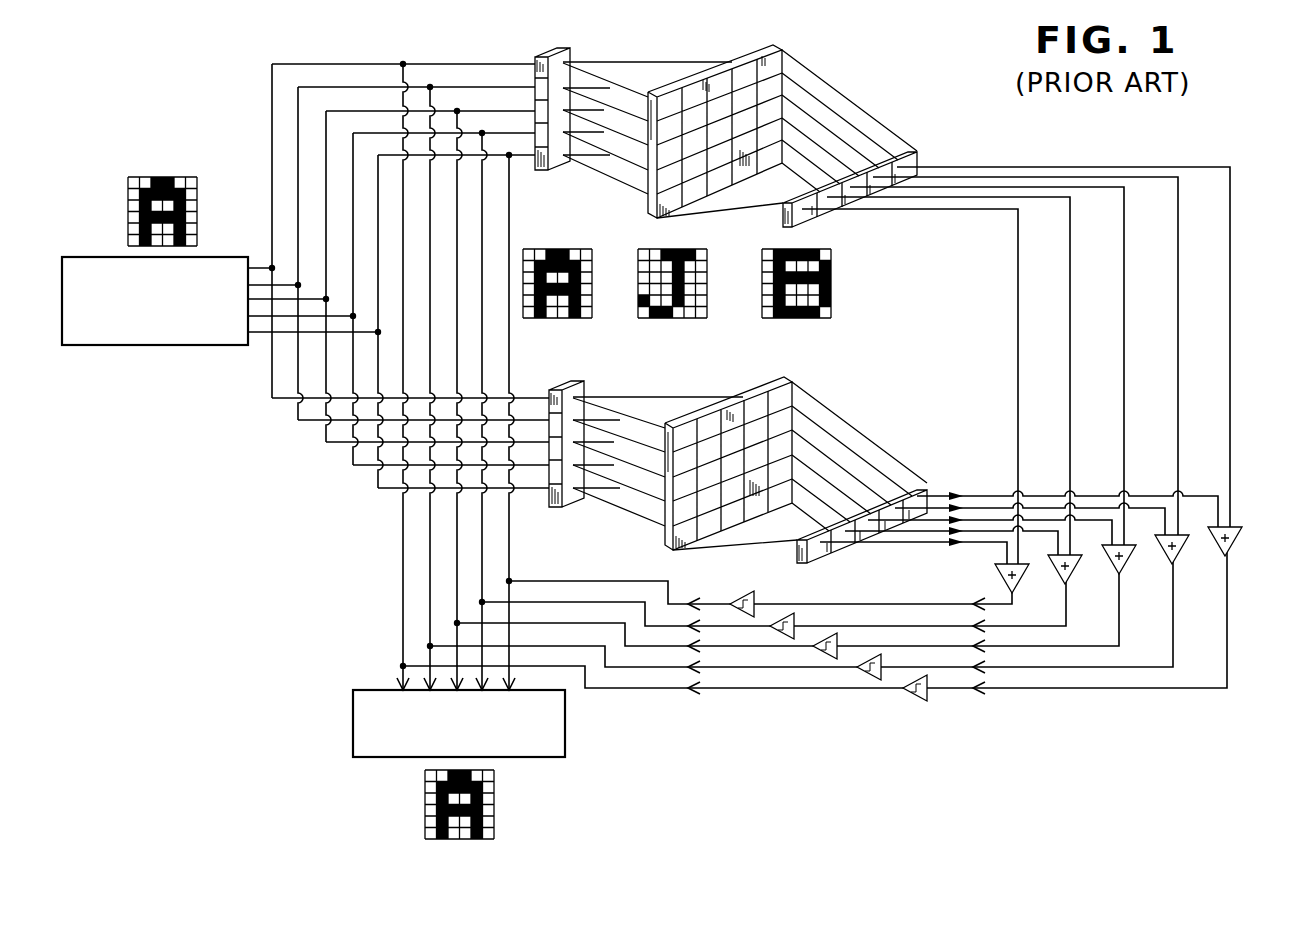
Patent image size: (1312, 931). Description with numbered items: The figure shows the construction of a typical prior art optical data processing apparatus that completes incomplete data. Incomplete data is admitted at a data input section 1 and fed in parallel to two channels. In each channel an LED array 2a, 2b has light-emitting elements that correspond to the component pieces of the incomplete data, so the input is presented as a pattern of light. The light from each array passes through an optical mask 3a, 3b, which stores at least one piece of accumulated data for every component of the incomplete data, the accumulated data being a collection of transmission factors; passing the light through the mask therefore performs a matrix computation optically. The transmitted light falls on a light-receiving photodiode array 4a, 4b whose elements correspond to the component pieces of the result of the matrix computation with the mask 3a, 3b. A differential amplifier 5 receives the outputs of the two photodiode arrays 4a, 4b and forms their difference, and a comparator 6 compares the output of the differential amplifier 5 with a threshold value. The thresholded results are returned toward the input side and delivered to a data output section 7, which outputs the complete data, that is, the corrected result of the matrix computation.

The data input section 1 is at (160, 345).
The LED array 2a is at (556, 54).
The LED array 2b is at (563, 388).
The optical mask 3a is at (758, 51).
The optical mask 3b is at (772, 385).
The light-receiving photodiode array 4a is at (911, 150).
The light-receiving photodiode array 4b is at (920, 488).
The differential amplifier 5 is at (1242, 532).
The comparator 6 is at (920, 700).
The data output section 7 is at (566, 727).